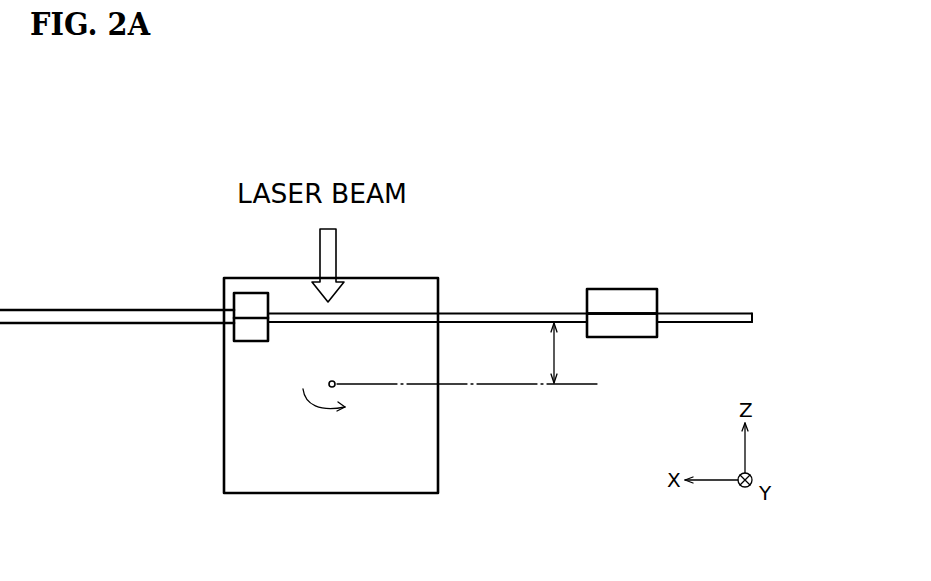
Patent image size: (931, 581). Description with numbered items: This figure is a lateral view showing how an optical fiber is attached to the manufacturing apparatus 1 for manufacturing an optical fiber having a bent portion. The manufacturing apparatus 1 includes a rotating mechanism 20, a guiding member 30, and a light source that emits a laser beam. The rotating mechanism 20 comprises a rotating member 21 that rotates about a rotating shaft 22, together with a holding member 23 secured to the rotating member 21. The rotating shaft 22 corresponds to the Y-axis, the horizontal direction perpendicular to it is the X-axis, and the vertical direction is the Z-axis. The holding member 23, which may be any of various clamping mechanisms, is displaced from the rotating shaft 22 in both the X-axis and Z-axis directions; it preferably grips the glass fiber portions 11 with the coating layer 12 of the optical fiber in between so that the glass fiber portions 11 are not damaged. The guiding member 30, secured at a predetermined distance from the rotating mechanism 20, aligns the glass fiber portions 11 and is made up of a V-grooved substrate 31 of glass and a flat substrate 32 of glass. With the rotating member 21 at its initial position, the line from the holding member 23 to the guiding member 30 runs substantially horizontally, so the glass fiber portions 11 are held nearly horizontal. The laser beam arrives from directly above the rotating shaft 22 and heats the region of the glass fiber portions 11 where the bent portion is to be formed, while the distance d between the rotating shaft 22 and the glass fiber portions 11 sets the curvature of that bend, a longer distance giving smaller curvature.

The manufacturing apparatus 1 is at (434, 221).
The glass fiber portions 11 is at (490, 317).
The coating layer 12 is at (100, 315).
The rotating mechanism 20 is at (158, 345).
The rotating member 21 is at (243, 438).
The rotating shaft 22 is at (329, 384).
The holding member 23 is at (234, 341).
The guiding member 30 is at (697, 250).
The V-grooved substrate 31 is at (632, 322).
The flat substrate 32 is at (612, 298).